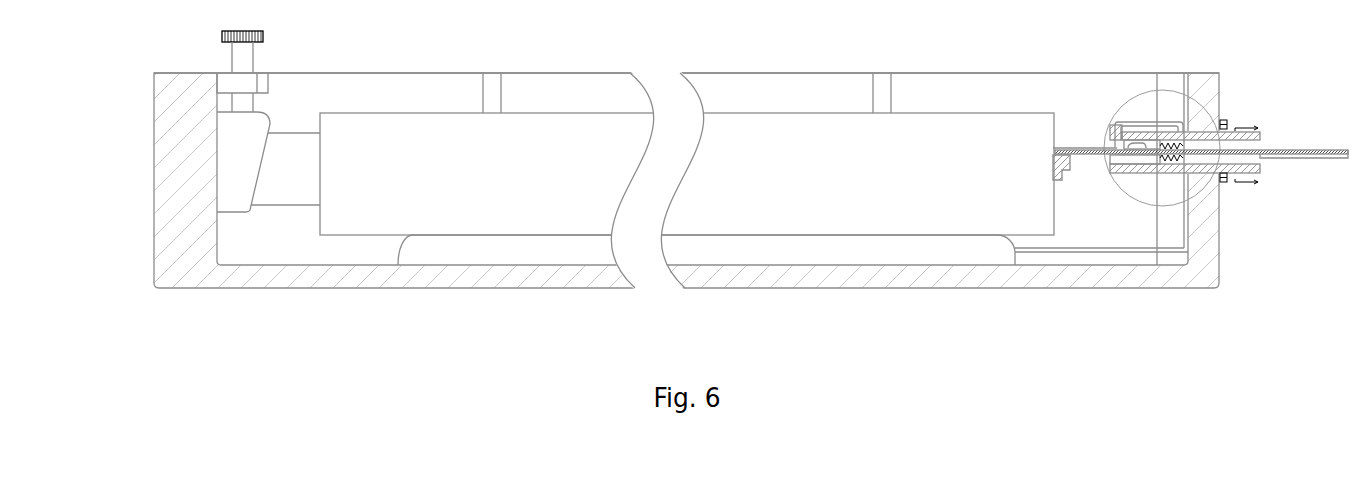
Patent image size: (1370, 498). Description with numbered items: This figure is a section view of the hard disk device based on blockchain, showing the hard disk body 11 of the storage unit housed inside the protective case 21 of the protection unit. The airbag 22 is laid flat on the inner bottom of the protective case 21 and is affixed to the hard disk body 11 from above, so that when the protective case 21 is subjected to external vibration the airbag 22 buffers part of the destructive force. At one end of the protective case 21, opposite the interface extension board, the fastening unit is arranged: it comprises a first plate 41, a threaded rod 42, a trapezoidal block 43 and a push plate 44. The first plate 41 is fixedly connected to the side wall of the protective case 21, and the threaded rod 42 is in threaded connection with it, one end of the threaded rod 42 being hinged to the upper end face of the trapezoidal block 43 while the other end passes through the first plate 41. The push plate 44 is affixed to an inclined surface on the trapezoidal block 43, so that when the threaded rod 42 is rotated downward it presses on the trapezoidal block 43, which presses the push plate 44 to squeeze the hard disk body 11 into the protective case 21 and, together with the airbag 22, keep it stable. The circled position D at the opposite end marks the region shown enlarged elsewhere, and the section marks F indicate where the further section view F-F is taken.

The hard disk body 11 is at (557, 122).
The protective case 21 is at (354, 82).
The airbag 22 is at (505, 242).
The first plate 41 is at (262, 82).
The threaded rod 42 is at (255, 31).
The trapezoidal block 43 is at (268, 118).
The push plate 44 is at (284, 202).
The position D is at (1120, 108).
The section F- F is at (1246, 152).